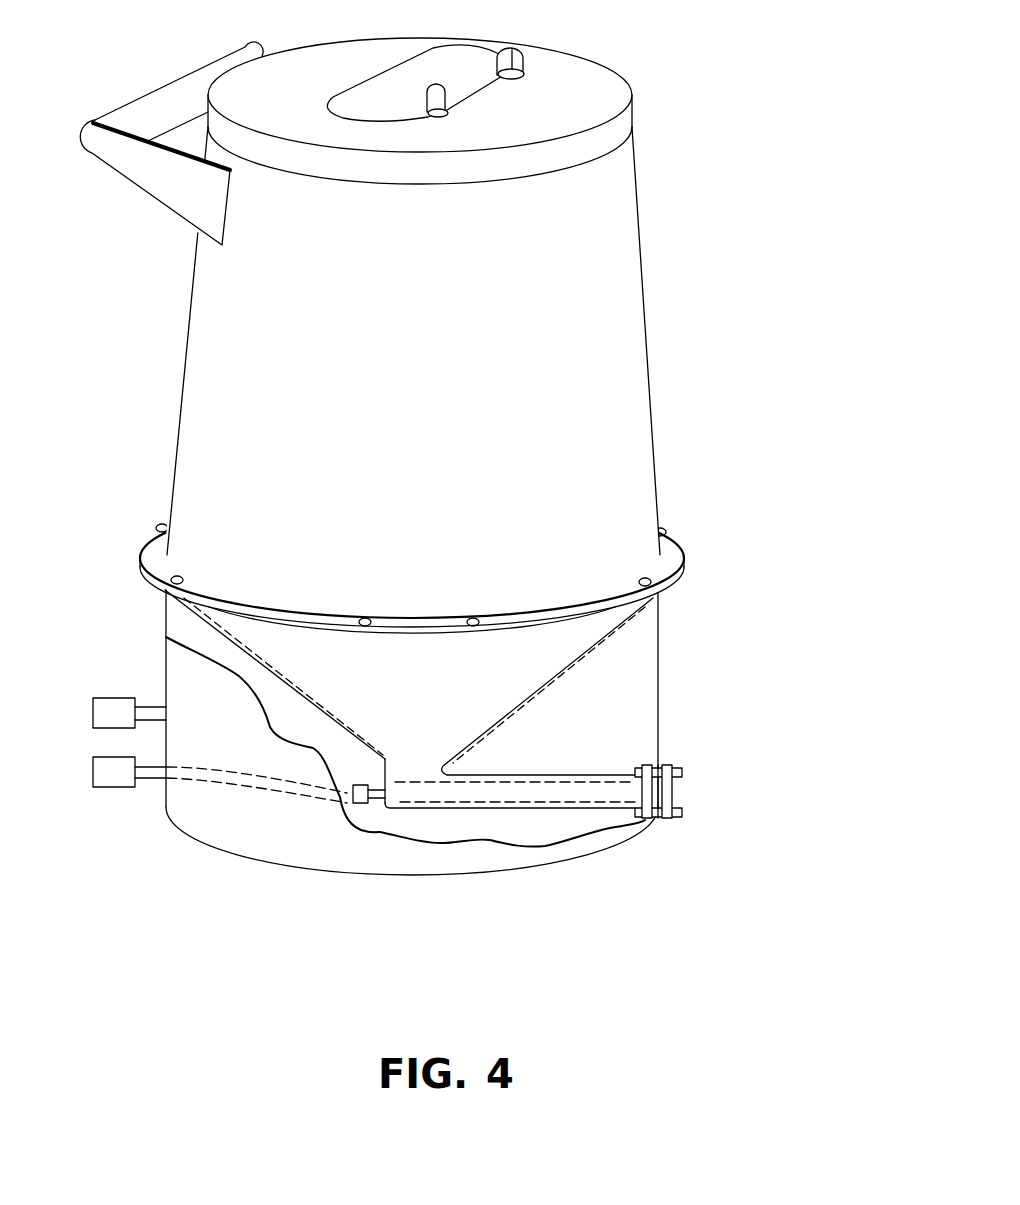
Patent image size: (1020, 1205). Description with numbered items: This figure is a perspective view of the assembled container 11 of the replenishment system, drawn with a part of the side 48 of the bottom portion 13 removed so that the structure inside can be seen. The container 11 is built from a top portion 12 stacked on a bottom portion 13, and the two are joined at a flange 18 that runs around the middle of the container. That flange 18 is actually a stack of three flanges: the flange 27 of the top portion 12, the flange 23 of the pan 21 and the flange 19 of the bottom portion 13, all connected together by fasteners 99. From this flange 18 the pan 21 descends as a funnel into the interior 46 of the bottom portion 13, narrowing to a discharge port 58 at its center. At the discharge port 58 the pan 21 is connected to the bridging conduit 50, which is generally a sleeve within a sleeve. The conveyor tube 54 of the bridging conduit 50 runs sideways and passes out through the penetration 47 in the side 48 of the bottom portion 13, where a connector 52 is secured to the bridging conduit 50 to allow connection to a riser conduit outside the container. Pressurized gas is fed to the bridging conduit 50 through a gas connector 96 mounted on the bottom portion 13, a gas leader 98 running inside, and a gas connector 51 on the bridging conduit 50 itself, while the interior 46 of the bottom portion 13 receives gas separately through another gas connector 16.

The container 11 is at (178, 425).
The top portion 12 is at (600, 298).
The bottom portion 13 is at (660, 695).
The gas connector 16 is at (107, 698).
The flange 18 is at (153, 558).
The flange of the bottom portion 19 is at (670, 585).
The pan 21 is at (520, 705).
The flange of the pan 23 is at (685, 563).
The flange of the top portion 27 is at (670, 550).
The interior of the bottom portion 46 is at (627, 745).
The penetration 47 is at (715, 875).
The side of the bottom portion 48 is at (660, 663).
The bridging conduit 50 is at (592, 850).
The gas connector 51 is at (360, 805).
The connector 52 is at (677, 790).
The conveyor tube 54 is at (453, 802).
The discharge port 58 is at (411, 770).
The gas connector 96 is at (108, 788).
The gas leader 98 is at (223, 783).
The fasteners 99 is at (472, 618).